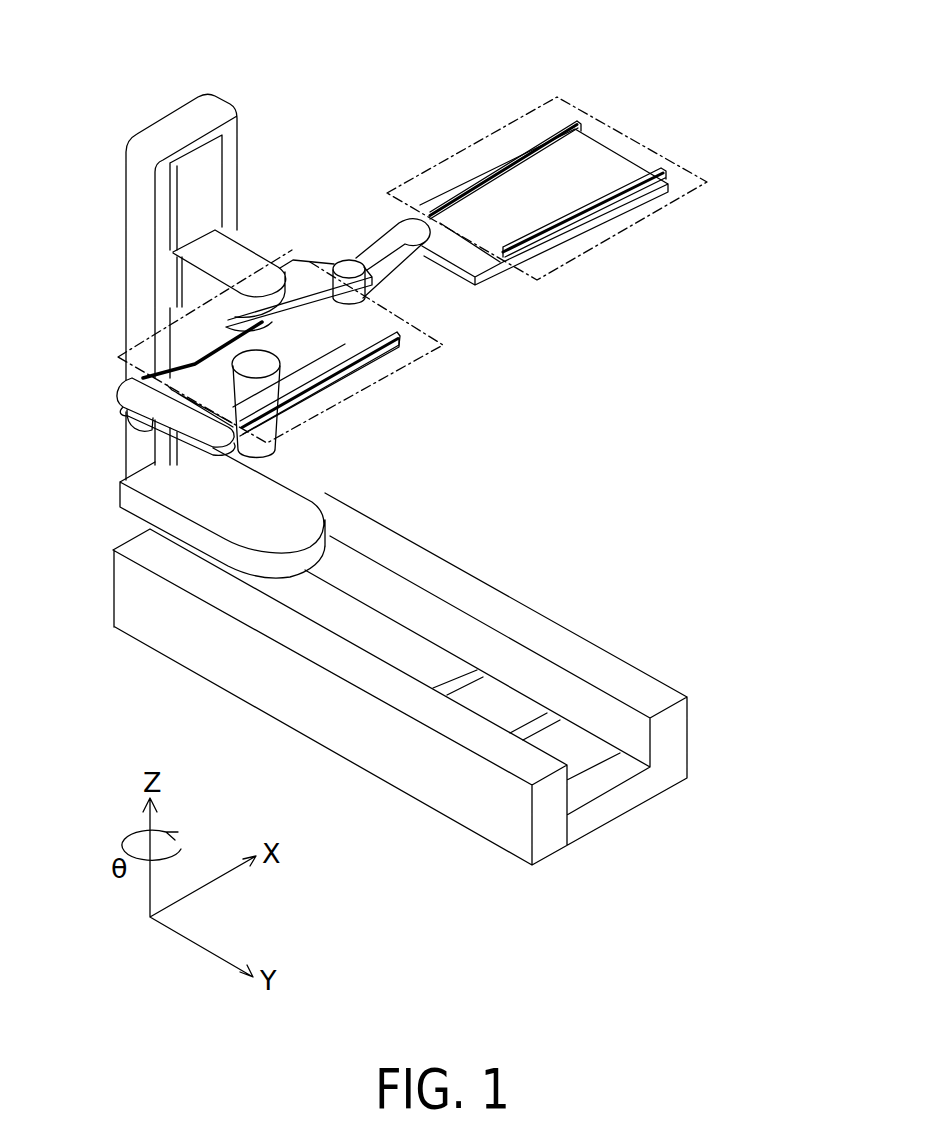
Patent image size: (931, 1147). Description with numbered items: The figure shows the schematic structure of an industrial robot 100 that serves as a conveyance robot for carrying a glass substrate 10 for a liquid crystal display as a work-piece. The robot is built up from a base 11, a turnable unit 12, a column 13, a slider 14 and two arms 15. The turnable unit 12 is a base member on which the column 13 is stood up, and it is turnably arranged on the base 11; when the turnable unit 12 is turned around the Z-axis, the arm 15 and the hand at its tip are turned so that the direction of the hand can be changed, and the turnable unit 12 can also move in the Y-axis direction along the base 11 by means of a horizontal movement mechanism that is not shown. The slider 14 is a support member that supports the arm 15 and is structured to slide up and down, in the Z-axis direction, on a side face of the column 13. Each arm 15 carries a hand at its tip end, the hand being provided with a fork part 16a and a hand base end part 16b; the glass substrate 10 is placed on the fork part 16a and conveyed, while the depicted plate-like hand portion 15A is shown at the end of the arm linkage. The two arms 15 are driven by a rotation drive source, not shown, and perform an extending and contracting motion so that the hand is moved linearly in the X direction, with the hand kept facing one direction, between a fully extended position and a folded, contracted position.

The industrial robot 100 is at (738, 102).
The glass substrate 10 is at (635, 223).
The base 11 is at (540, 633).
The turnable unit 12 is at (282, 505).
The column 13 is at (147, 307).
The slider 14 is at (240, 263).
The arm 15 is at (357, 245).
The hand plate 15A is at (500, 293).
The fork part 16a is at (547, 138).
The hand base end part 16b is at (383, 220).